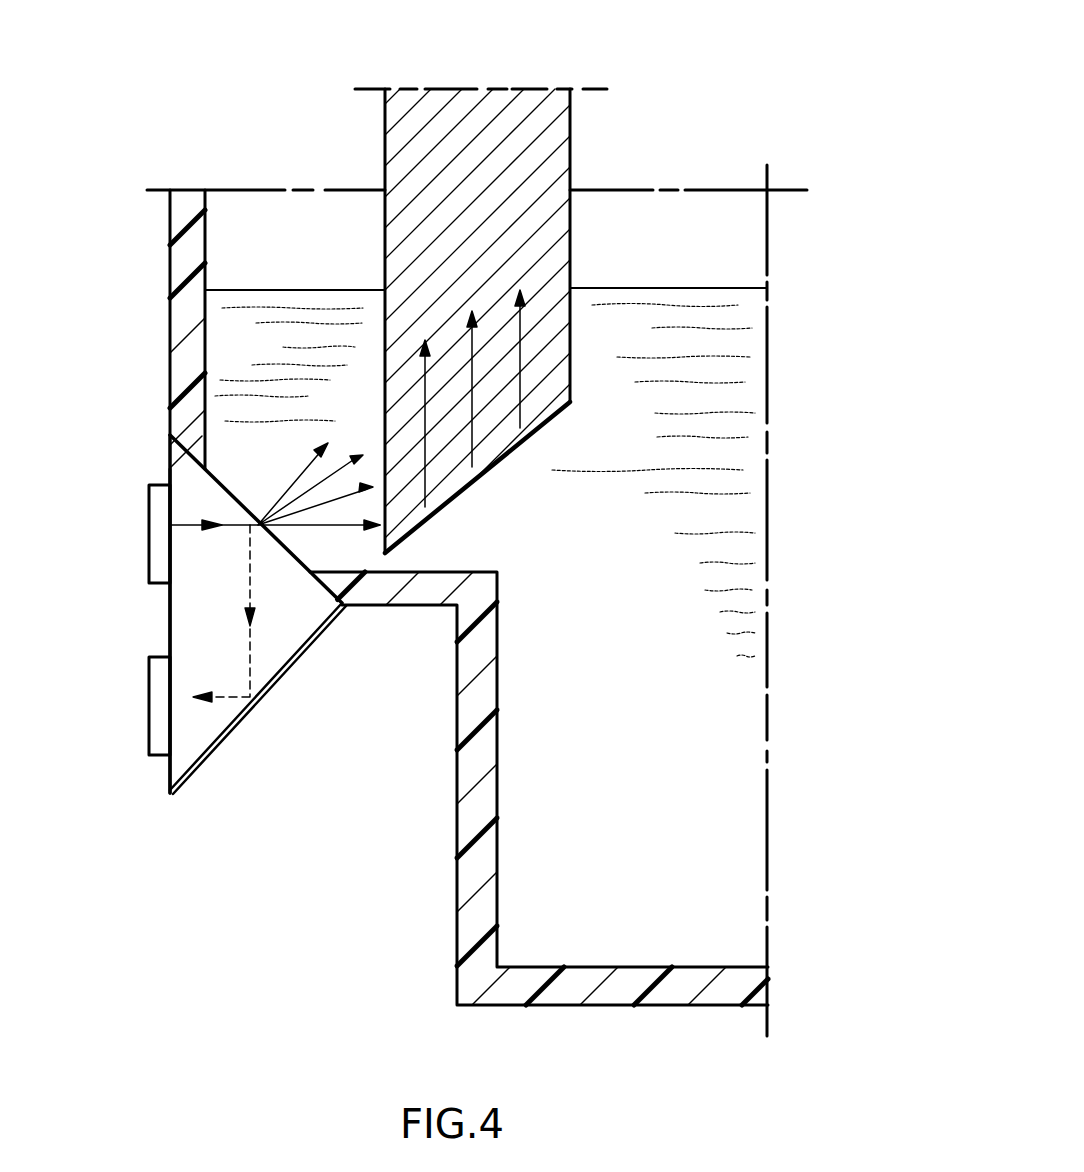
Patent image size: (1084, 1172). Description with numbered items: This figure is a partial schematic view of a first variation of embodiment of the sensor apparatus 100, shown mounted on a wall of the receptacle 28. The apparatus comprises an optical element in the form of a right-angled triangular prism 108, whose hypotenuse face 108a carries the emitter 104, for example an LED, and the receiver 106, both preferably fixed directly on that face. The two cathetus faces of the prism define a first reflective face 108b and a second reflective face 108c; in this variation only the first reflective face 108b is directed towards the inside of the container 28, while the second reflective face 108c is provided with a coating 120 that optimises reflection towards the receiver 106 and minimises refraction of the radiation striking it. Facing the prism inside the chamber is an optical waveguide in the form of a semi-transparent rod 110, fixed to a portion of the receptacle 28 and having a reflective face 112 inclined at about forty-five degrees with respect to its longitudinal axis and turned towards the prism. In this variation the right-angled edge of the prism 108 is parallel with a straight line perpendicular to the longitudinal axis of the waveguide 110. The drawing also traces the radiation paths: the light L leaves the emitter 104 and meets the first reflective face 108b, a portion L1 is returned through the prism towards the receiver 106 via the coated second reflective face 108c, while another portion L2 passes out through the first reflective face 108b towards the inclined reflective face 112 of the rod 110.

The receptacle 28 is at (456, 941).
The sensor apparatus 100 is at (191, 786).
The emitter 104 is at (150, 532).
The receiver 106 is at (148, 712).
The triangular prism 108 is at (201, 603).
The hypotenuse face 108a is at (170, 641).
The first reflective face 108b is at (230, 488).
The second reflective face 108c is at (218, 738).
The semi-transparent rod 110 is at (613, 279).
The reflective face 112 is at (493, 478).
The coating 120 is at (280, 633).
The light L is at (187, 522).
The reflected light L1 is at (250, 593).
The transmitted light L2 is at (335, 527).